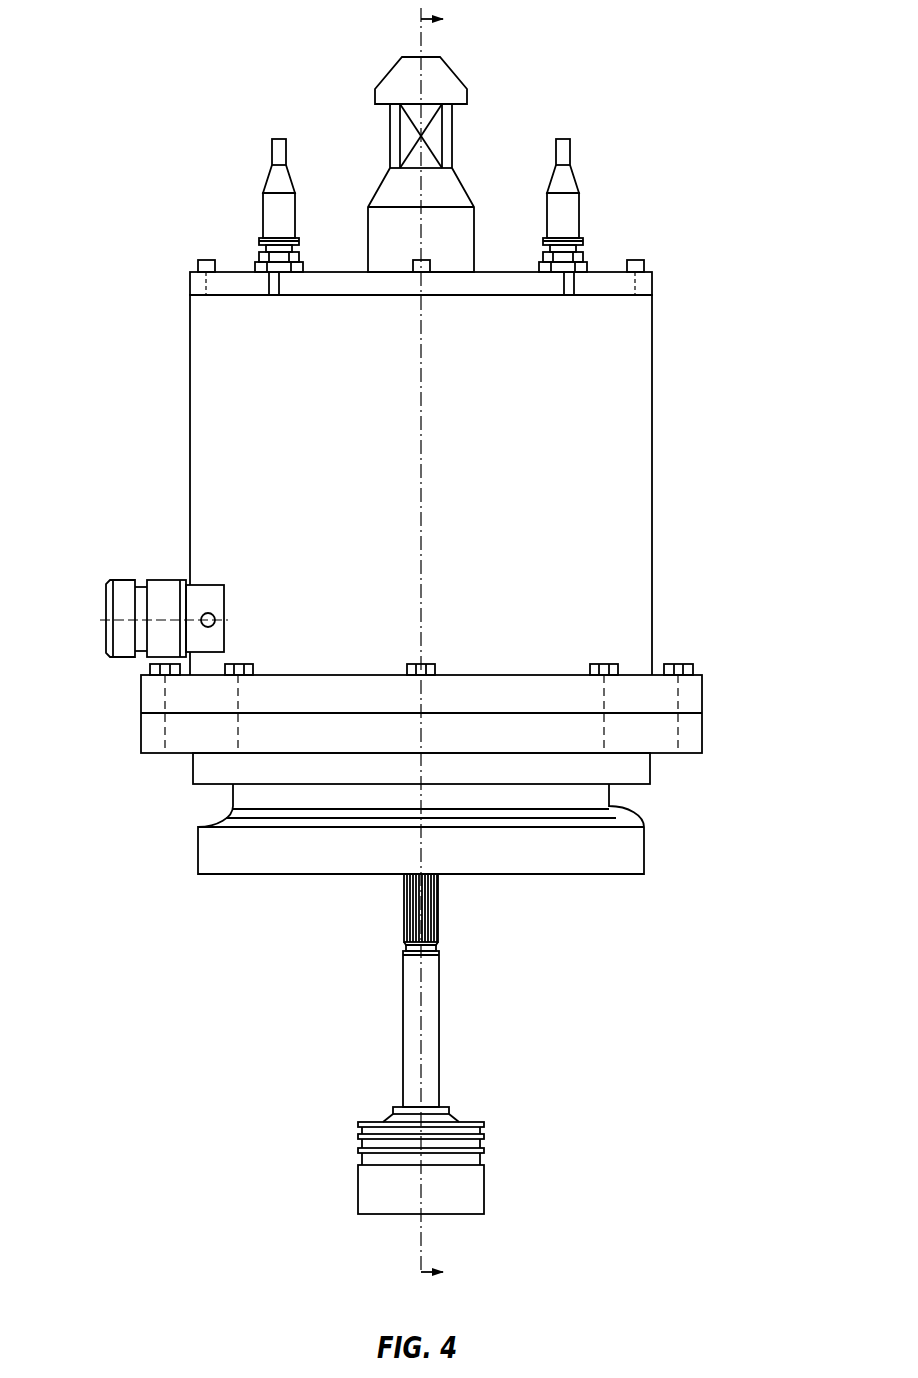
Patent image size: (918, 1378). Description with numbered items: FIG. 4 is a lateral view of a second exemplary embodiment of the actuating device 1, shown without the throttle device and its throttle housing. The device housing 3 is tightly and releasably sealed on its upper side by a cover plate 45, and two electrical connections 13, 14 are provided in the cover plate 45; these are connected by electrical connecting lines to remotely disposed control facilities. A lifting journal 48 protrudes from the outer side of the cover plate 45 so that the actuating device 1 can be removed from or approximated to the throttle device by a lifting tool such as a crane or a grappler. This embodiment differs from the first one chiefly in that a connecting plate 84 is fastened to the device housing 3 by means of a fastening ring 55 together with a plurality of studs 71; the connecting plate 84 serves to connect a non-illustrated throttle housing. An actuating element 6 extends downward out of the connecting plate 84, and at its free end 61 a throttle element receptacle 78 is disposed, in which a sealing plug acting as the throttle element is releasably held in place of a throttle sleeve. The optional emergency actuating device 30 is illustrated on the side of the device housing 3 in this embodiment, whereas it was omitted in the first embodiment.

The actuating device 1 is at (400, 647).
The device housing 3 is at (647, 360).
The actuating element 6 is at (434, 910).
The electrical connection 13 is at (582, 254).
The electrical connection 14 is at (298, 254).
The emergency actuating device 30 is at (116, 574).
The cover plate 45 is at (652, 285).
The lifting journal 48 is at (468, 80).
The fastening ring 55 is at (694, 695).
The free end 61 is at (480, 1190).
The stud 71 is at (677, 664).
The throttle element receptacle 78 is at (473, 1160).
The connecting plate 84 is at (180, 763).